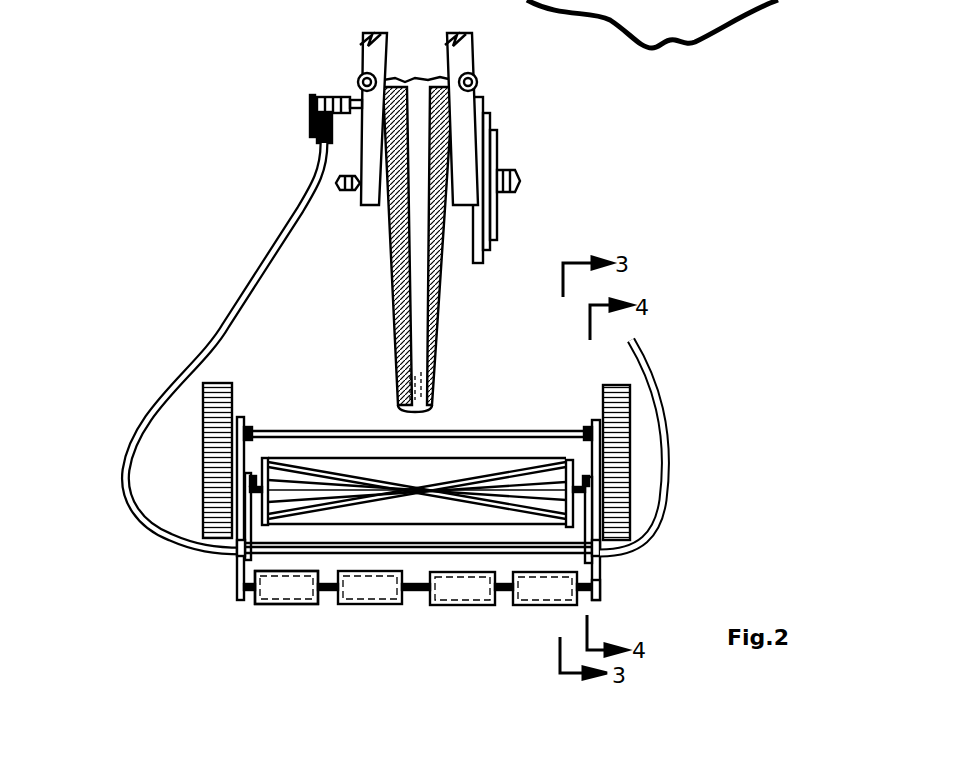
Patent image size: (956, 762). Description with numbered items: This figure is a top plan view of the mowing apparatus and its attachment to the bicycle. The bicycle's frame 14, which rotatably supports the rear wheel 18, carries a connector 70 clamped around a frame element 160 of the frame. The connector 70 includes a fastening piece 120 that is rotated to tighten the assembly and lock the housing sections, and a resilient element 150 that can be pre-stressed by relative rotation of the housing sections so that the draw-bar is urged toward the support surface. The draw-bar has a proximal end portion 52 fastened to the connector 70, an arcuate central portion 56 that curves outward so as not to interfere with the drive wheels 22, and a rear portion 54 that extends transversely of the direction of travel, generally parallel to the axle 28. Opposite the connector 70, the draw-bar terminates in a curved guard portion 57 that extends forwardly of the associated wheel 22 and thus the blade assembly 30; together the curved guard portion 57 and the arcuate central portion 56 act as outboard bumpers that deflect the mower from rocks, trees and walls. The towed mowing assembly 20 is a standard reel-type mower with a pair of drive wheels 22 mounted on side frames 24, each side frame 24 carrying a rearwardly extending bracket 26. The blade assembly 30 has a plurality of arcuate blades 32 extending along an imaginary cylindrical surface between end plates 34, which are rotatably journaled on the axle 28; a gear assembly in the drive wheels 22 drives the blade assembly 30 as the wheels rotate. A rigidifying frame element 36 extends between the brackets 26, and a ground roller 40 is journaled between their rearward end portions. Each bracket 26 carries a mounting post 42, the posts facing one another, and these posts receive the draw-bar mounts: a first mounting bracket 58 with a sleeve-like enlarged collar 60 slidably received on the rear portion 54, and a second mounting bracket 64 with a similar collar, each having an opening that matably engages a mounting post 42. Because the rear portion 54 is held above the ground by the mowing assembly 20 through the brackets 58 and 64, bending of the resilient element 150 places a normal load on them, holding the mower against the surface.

The frame 14 is at (362, 55).
The rear wheel 18 is at (423, 293).
The mowing assembly 20 is at (610, 0).
The drive wheels 22 is at (212, 385).
The side frames 24 is at (240, 417).
The bracket 26 is at (238, 556).
The axle 28 is at (496, 458).
The blade assembly 30 is at (309, 445).
The arcuate blades 32 is at (375, 458).
The end plates 34 is at (280, 487).
The rigidifying frame element 36 is at (468, 458).
The ground roller 40 is at (447, 605).
The mounting post 42 is at (252, 476).
The proximal end portion 52 is at (318, 167).
The rear portion 54 is at (327, 553).
The arcuate central portion 56 is at (133, 435).
The curved guard portion 57 is at (667, 410).
The first mounting bracket 58 is at (634, 530).
The enlarged collar 60 is at (600, 588).
The second mounting bracket 64 is at (278, 602).
The connector 70 is at (318, 98).
The fastening piece 120 is at (298, 110).
The resilient element 150 is at (317, 140).
The frame element 160 is at (362, 42).